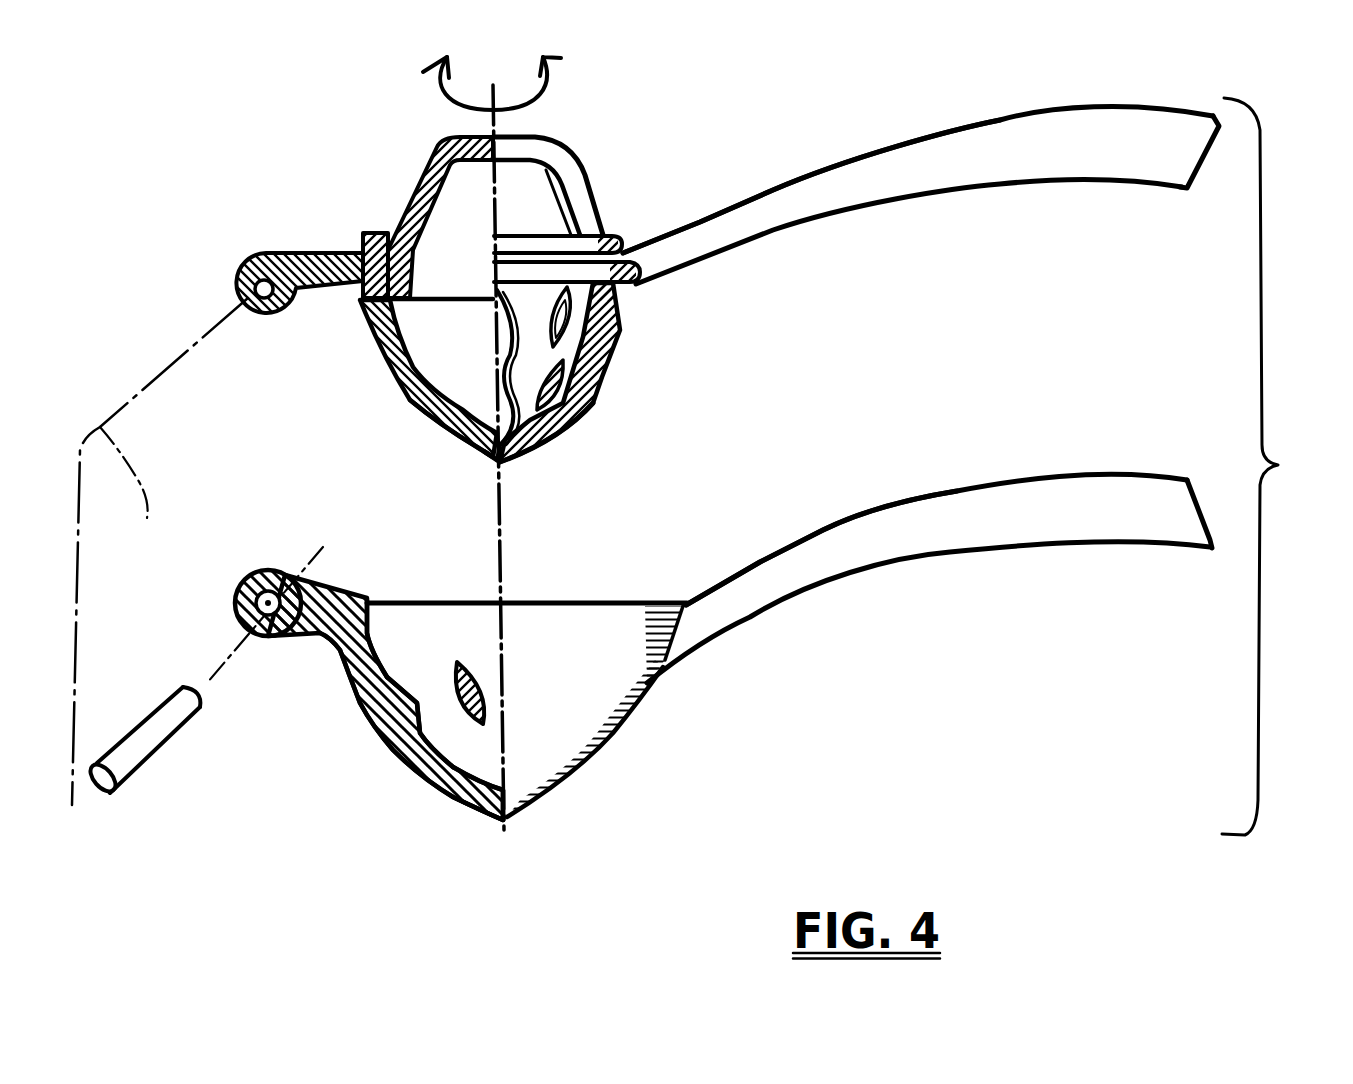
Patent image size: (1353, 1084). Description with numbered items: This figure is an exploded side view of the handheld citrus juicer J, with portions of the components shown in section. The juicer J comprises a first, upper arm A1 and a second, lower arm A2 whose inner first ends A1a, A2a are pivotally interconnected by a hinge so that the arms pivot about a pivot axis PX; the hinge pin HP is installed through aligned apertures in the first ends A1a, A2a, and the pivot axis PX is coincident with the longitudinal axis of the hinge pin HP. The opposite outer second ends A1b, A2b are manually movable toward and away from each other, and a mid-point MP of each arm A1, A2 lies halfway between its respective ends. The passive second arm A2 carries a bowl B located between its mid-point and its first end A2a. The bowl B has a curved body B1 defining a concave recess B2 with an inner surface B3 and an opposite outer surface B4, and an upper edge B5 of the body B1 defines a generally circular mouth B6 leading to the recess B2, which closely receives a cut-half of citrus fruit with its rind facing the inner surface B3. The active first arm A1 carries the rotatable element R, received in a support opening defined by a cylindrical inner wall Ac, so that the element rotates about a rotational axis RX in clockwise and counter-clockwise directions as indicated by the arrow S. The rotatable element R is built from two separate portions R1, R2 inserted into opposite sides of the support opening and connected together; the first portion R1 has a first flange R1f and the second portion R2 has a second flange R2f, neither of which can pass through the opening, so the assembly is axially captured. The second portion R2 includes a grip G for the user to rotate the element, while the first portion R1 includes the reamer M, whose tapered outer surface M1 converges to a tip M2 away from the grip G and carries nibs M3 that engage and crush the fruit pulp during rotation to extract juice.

The first arm A1 is at (857, 173).
The first end of first arm A1a is at (271, 256).
The second end of first arm A1b is at (1158, 190).
The second arm A2 is at (860, 557).
The first end of second arm A2a is at (280, 645).
The second end of second arm A2b is at (1173, 550).
The cylindrical inner wall Ac is at (413, 258).
The arrow S is at (545, 88).
The grip G is at (590, 168).
The second portion of rotatable element R2 is at (612, 237).
The second flange R2f is at (640, 247).
The first portion of rotatable element R1 is at (605, 352).
The first flange R1f is at (620, 297).
The mid-point MP is at (800, 240).
The reamer M is at (592, 396).
The tapered outer surface M1 is at (395, 368).
The tip M2 is at (480, 456).
The nibs M3 is at (575, 320).
The rotatable element R is at (393, 401).
The rotational axis RX is at (515, 487).
The pivot axis PX is at (197, 551).
The hinge pin HP is at (158, 755).
The bowl B is at (563, 790).
The bowl body B1 is at (407, 770).
The recess B2 is at (423, 633).
The inner surface B3 is at (387, 625).
The outer surface B4 is at (460, 803).
The upper edge B5 is at (407, 593).
The mouth B6 is at (467, 625).
The juicer J is at (1267, 466).